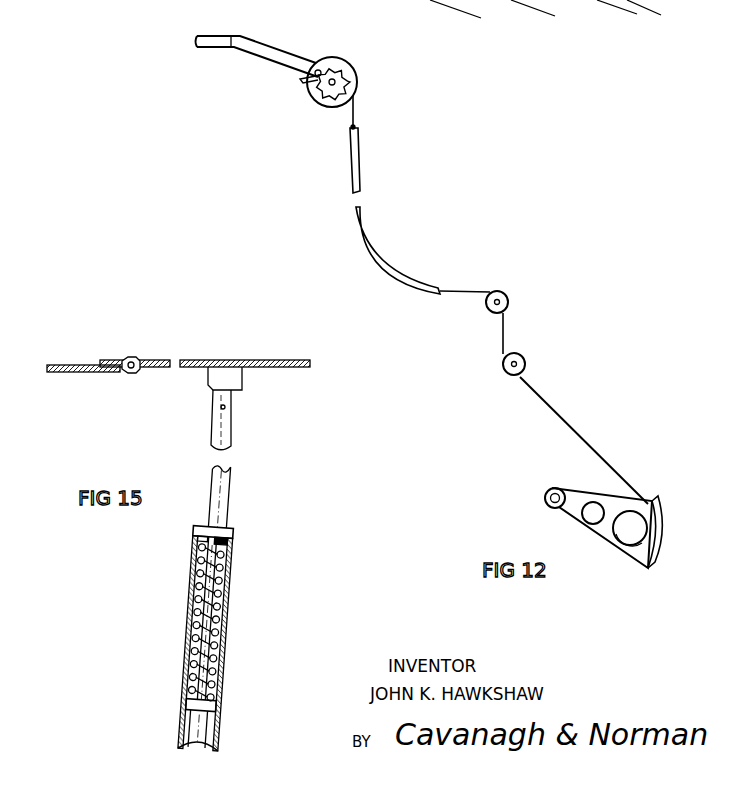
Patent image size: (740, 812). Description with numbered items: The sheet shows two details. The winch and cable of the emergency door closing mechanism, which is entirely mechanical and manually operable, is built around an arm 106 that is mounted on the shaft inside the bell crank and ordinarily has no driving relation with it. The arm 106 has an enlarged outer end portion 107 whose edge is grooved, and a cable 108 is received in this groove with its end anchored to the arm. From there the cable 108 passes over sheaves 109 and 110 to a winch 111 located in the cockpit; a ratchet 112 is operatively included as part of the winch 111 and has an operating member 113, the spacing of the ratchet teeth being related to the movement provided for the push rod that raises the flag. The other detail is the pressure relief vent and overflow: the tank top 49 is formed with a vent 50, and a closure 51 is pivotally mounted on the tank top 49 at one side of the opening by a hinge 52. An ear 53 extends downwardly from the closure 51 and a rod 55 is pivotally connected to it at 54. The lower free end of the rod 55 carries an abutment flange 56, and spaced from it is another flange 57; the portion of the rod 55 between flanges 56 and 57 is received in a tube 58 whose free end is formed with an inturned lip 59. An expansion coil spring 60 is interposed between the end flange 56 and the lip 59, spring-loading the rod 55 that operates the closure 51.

In FIG. 12, the operating member 113 is at (253, 38).
In FIG. 12, the ratchet 112 is at (320, 96).
In FIG. 12, the winch 111 is at (358, 79).
In FIG. 12, the sheave 110 is at (508, 294).
In FIG. 12, the sheave 109 is at (527, 358).
In FIG. 12, the cable 108 is at (543, 407).
In FIG. 12, the arm 106 is at (566, 512).
In FIG. 12, the enlarged outer end portion 107 is at (644, 557).
In FIG. 15, the tank top 49 is at (73, 363).
In FIG. 15, the closure 51 is at (158, 359).
In FIG. 15, the hinge 52 is at (127, 358).
In FIG. 15, the vent 50 is at (265, 368).
In FIG. 15, the ear 53 is at (216, 385).
In FIG. 15, the pivotal connection 54 is at (232, 406).
In FIG. 15, the rod 55 is at (222, 485).
In FIG. 15, the flange 57 is at (232, 528).
In FIG. 15, the inturned lip 59 is at (232, 541).
In FIG. 15, the expansion coil spring 60 is at (195, 557).
In FIG. 15, the abutment flange 56 is at (218, 692).
In FIG. 15, the tube 58 is at (218, 725).